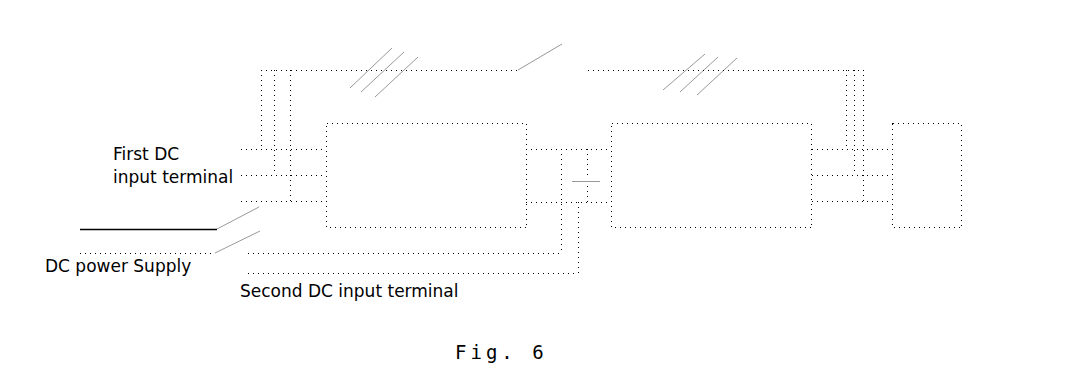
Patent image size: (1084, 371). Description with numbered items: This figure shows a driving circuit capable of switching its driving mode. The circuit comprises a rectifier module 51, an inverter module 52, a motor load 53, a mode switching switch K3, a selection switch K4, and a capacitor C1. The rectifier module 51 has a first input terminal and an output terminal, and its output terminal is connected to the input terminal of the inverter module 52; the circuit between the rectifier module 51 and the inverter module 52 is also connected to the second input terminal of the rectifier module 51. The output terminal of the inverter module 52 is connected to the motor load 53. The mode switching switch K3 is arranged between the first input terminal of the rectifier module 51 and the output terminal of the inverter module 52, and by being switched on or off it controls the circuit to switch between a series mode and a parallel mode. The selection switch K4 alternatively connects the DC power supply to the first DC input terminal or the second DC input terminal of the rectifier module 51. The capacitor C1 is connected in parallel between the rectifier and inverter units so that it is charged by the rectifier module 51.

The rectifier module 51 is at (417, 122).
The inverter module 52 is at (715, 122).
The motor load 53 is at (907, 123).
The mode switching switch K3 is at (562, 45).
The selection switch K4 is at (183, 230).
The capacitor C1 is at (599, 175).